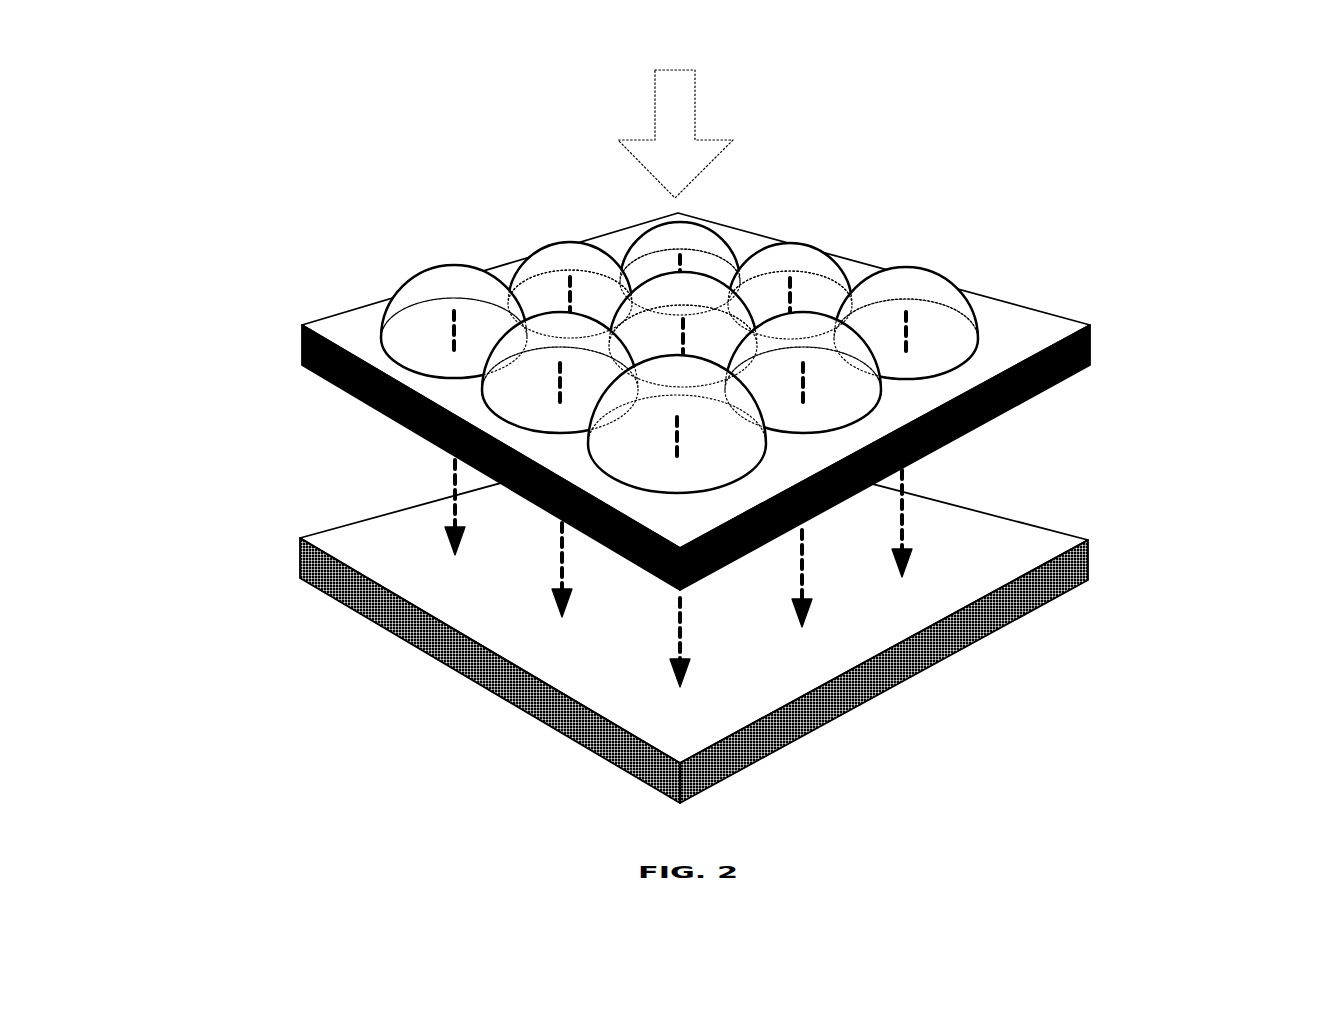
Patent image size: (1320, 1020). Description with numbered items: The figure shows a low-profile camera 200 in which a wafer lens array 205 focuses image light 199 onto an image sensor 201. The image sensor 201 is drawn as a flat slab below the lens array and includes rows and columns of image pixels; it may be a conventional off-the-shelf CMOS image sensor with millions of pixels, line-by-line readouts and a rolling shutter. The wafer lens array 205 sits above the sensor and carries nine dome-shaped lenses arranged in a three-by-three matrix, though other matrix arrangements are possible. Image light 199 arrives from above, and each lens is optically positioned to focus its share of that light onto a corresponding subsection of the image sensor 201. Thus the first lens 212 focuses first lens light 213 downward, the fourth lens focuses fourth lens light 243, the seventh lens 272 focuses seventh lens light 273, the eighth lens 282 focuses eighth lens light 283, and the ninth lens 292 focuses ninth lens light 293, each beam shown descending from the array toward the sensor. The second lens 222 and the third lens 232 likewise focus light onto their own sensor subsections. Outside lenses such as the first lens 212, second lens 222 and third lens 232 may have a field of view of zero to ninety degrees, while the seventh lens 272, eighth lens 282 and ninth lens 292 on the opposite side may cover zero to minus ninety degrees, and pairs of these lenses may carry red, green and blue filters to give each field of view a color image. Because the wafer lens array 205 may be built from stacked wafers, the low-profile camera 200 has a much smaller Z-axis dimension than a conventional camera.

The image light 199 is at (674, 117).
The low-profile camera 200 is at (294, 178).
The image sensor 201 is at (1088, 560).
The wafer lens array 205 is at (662, 356).
The first lens 212 is at (412, 281).
The first lens light 213 is at (450, 480).
The second lens 222 is at (547, 243).
The third lens 232 is at (647, 230).
The fourth lens light 243 is at (560, 562).
The seventh lens 272 is at (763, 466).
The seventh lens light 273 is at (680, 618).
The eighth lens 282 is at (877, 407).
The eighth lens light 283 is at (807, 583).
The ninth lens 292 is at (948, 280).
The ninth lens light 293 is at (903, 507).